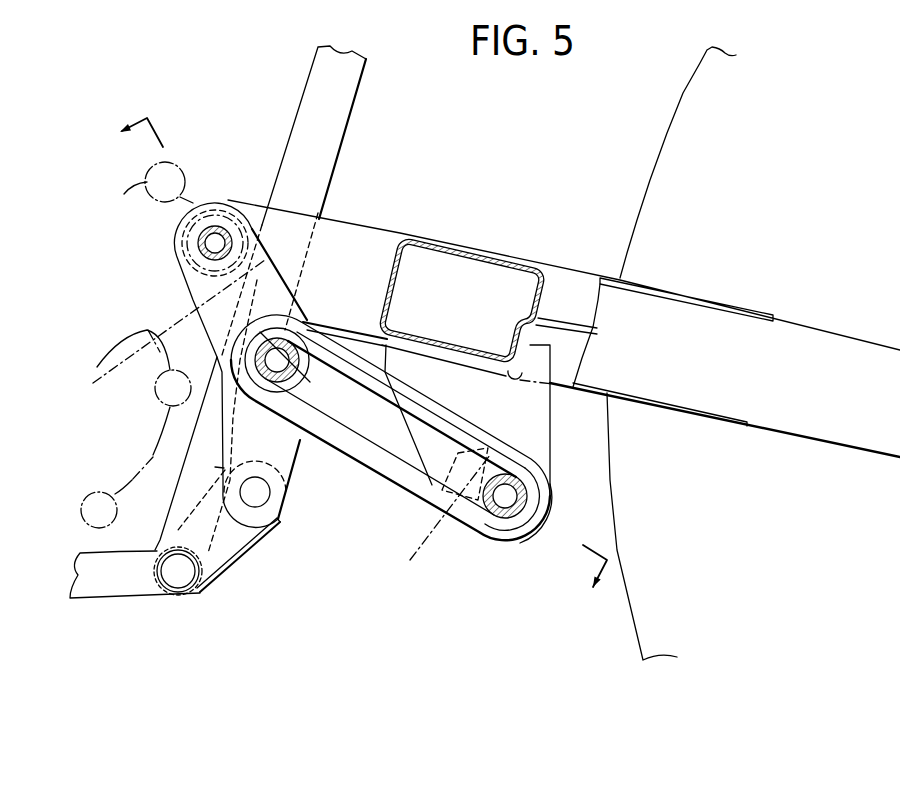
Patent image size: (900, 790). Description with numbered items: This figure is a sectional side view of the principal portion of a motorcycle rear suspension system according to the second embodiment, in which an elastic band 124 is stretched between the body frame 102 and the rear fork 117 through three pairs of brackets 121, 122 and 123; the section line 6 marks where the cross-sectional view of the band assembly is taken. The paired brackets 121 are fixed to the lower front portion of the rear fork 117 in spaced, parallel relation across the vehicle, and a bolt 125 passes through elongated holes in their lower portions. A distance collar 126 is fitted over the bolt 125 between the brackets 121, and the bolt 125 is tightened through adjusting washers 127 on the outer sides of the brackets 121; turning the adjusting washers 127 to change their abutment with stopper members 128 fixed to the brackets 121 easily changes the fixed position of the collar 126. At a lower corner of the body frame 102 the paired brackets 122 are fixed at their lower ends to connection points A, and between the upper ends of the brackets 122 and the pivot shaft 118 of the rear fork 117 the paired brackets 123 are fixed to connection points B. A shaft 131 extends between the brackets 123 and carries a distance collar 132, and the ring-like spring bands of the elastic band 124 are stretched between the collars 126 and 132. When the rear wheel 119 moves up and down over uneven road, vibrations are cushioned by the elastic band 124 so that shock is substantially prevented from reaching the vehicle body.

The body frame 102 is at (104, 593).
The rear fork 117 is at (850, 438).
The pivot shaft 118 is at (216, 237).
The rear wheel 119 is at (643, 632).
The brackets 121 is at (560, 427).
The brackets 122 is at (230, 556).
The brackets 123 is at (207, 308).
The elastic band 124 is at (407, 500).
The bolt 125 is at (505, 503).
The distance collar 126 is at (515, 520).
The adjusting washers 127 is at (538, 507).
The stopper members 128 is at (470, 515).
The shaft 131 is at (275, 340).
The distance collar 132 is at (291, 400).
The connection points A is at (180, 582).
The connection points B is at (203, 237).
The section line 6- 6 is at (354, 369).